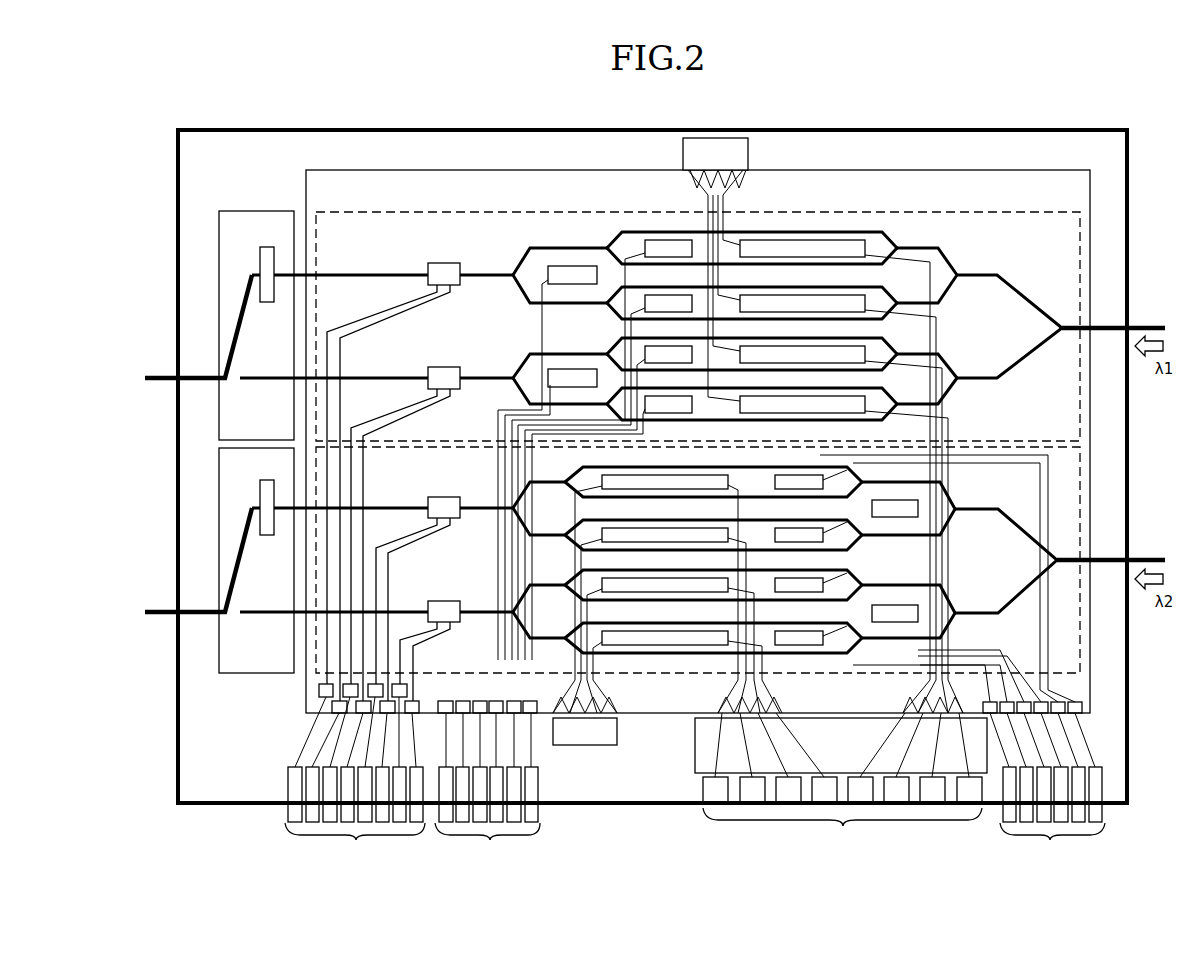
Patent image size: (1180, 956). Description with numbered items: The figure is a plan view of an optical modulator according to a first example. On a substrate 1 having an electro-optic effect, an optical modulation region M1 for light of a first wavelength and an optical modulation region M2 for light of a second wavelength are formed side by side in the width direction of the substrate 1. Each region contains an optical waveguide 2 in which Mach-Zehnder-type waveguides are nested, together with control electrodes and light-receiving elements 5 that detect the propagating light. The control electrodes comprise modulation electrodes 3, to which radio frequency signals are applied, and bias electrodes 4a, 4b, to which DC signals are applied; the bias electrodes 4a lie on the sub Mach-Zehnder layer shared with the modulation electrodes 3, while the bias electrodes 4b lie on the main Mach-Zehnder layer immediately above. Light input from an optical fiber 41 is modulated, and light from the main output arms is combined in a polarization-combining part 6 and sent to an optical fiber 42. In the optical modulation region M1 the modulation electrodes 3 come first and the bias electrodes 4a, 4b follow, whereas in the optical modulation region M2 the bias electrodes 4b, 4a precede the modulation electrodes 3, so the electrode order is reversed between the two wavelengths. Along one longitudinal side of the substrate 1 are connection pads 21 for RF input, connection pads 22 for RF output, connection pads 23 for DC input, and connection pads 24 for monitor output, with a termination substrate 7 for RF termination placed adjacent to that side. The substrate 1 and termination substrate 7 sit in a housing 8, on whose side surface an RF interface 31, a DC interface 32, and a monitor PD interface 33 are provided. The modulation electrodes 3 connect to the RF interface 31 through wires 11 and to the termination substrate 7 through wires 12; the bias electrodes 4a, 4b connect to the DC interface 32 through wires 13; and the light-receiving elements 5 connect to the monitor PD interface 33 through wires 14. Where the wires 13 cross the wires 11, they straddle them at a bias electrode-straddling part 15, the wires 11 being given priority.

The substrate 1 is at (1035, 185).
The optical waveguide 2 is at (983, 254).
The modulation electrodes 3 is at (836, 238).
The bias electrodes 4a is at (670, 238).
The bias electrodes 4b is at (578, 263).
The light-receiving elements 5 is at (443, 262).
The polarization-combining part 6 is at (264, 228).
The termination substrate 7 is at (733, 153).
The housing 8 is at (1130, 148).
The wires 11 is at (945, 415).
The wires 12 is at (723, 220).
The wires 13 is at (1055, 537).
The wires 14 is at (388, 305).
The bias electrode-straddling part 15 is at (945, 650).
The connection pads 21 is at (700, 718).
The connection pads 22 is at (615, 718).
The connection pads 23 is at (1085, 710).
The connection pads 24 is at (319, 690).
The RF interface 31 is at (843, 830).
The DC interface 32 is at (490, 842).
The monitor PD interface 33 is at (357, 842).
The optical fiber 41 is at (1156, 318).
The optical fiber 42 is at (165, 372).
The optical modulation region M1 is at (1085, 275).
The optical modulation region M2 is at (1085, 505).